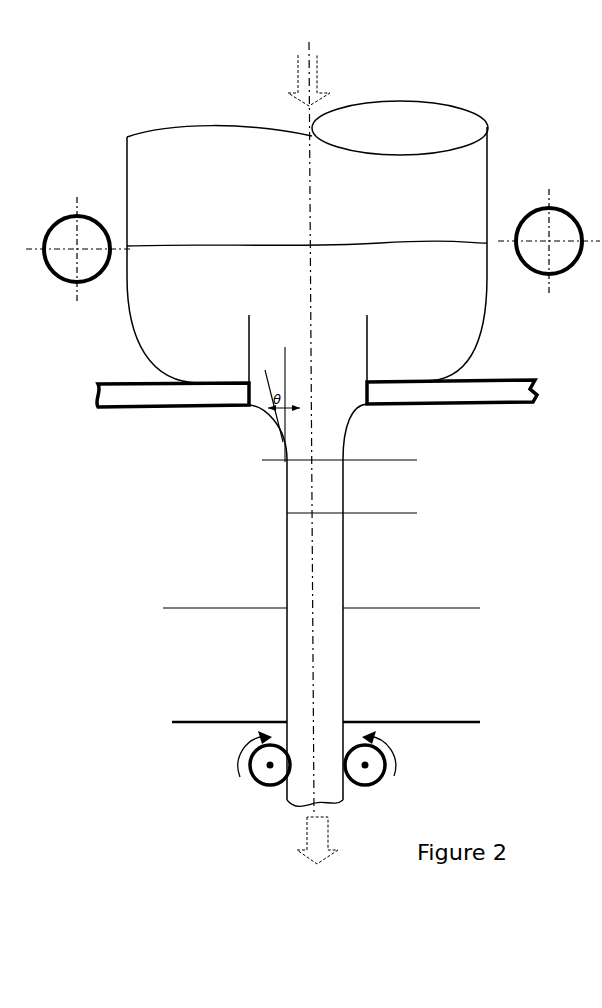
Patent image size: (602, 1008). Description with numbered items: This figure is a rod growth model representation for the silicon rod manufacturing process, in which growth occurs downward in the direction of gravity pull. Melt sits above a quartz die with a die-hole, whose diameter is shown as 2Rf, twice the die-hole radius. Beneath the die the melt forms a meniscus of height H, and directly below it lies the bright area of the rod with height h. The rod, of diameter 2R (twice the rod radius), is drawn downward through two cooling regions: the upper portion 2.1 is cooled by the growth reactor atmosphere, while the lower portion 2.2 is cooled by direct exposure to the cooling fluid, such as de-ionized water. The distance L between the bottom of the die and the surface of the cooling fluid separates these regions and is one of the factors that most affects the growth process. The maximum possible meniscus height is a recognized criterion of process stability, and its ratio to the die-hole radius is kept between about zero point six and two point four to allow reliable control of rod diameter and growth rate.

The portion of the rod cooled by growth reactor atmosphere 2.1 is at (268, 460).
The portion of the rod cooled by cooling fluid 2.2 is at (268, 613).
The die-hole diameter 2Rf is at (249, 315).
The rod diameter 2R is at (287, 659).
The meniscus height H is at (383, 405).
The bright area of the rod height h is at (383, 460).
The distance between the bottom of the die and the surface of the cooling fluid L is at (442, 405).